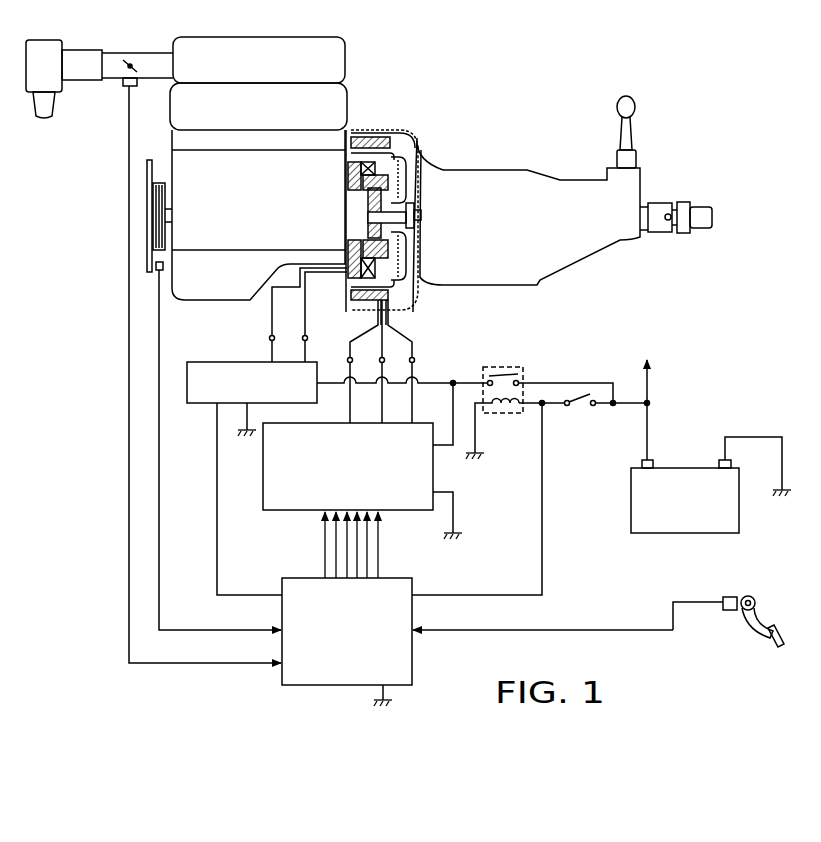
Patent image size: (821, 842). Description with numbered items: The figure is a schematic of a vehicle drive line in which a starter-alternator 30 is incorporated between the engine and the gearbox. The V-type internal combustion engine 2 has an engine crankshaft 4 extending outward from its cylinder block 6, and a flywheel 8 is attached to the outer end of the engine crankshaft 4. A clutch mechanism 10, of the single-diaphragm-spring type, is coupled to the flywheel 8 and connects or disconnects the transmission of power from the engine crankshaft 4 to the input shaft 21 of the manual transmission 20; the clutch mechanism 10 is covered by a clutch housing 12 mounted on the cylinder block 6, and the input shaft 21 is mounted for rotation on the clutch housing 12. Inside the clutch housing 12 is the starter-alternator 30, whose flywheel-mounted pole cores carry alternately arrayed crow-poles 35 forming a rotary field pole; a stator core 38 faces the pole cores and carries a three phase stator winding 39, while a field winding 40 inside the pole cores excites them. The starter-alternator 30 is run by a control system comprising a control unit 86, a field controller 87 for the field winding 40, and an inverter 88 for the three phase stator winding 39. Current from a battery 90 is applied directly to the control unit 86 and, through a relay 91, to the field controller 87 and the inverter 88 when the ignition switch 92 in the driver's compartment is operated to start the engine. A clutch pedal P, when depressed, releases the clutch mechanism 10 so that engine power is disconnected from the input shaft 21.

The V-type internal combustion engine 2 is at (390, 206).
The engine crankshaft 4 is at (350, 220).
The cylinder block 6 is at (258, 196).
The flywheel 8 is at (413, 140).
The clutch mechanism 10 is at (416, 282).
The clutch housing 12 is at (393, 130).
The manual transmission 20 is at (512, 182).
The input shaft 21 is at (420, 217).
The starter-alternator 30 is at (345, 163).
The crow-poles 35 is at (347, 284).
The stator core 38 is at (370, 135).
The three phase stator winding 39 is at (387, 300).
The field winding 40 is at (347, 250).
The control unit 86 is at (297, 687).
The field controller 87 is at (252, 362).
The inverter 88 is at (268, 512).
The battery 90 is at (687, 468).
The relay 91 is at (515, 367).
The ignition switch 92 is at (578, 406).
The clutch pedal P is at (775, 632).